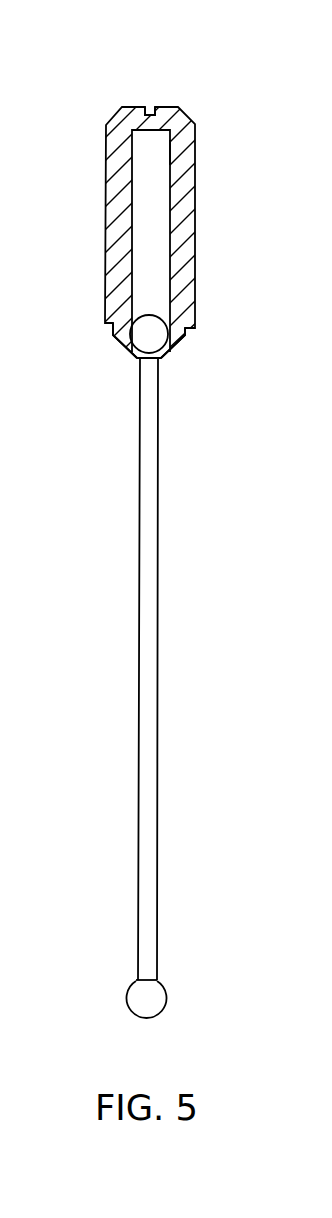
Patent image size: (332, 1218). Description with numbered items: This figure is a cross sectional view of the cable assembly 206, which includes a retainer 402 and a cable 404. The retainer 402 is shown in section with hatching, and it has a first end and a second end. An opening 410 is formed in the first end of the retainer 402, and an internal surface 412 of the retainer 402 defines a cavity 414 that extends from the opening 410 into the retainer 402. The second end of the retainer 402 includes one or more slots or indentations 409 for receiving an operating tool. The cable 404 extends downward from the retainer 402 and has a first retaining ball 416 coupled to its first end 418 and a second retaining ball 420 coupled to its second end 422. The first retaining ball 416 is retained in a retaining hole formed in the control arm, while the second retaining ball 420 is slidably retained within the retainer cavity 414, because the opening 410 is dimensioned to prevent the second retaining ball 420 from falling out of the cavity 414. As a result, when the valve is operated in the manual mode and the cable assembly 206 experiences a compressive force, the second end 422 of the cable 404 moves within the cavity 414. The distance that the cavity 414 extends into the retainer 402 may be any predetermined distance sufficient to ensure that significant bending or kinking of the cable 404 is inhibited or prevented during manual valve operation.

The probe 206 is at (97, 108).
The retainer 402 is at (197, 235).
The cable 404 is at (148, 583).
The slots or indentations 409 is at (152, 107).
The opening 410 is at (160, 372).
The internal surface 412 is at (172, 152).
The cavity 414 is at (150, 200).
The first retaining ball 416 is at (150, 998).
The first end 418 is at (137, 975).
The second retaining ball 420 is at (158, 340).
The second end 422 is at (126, 352).